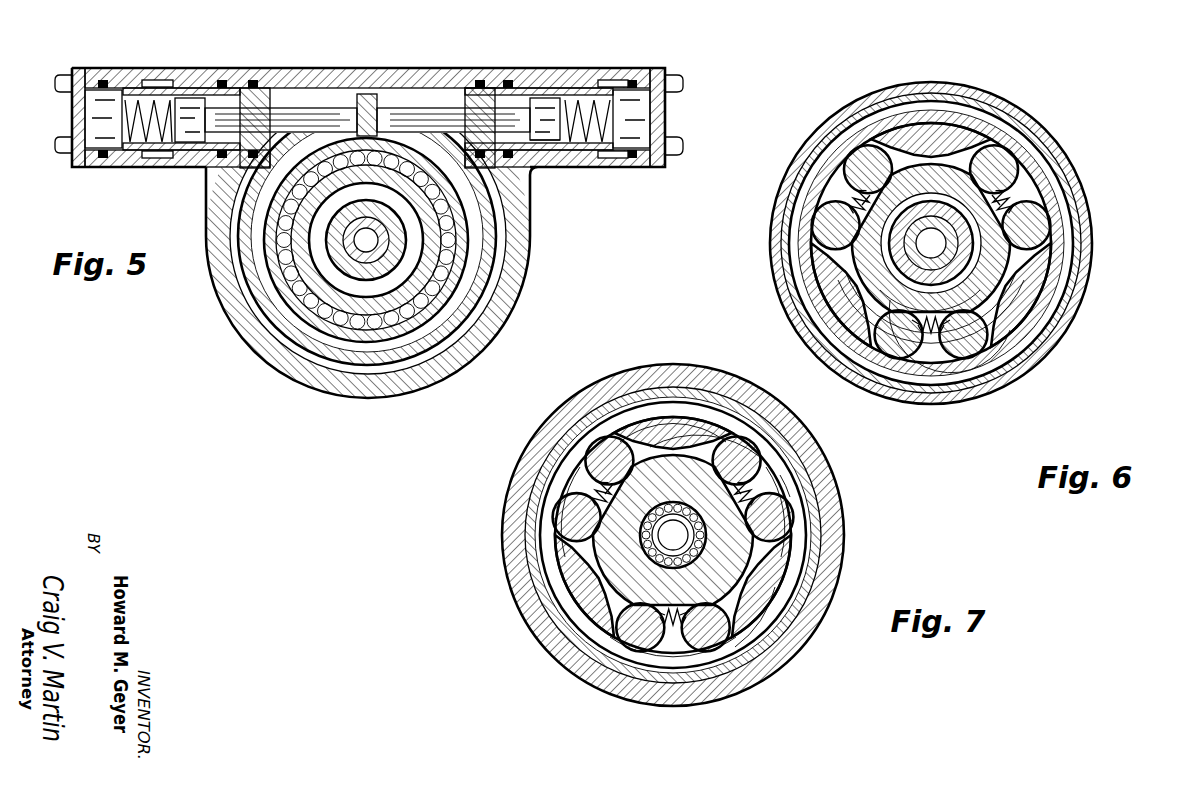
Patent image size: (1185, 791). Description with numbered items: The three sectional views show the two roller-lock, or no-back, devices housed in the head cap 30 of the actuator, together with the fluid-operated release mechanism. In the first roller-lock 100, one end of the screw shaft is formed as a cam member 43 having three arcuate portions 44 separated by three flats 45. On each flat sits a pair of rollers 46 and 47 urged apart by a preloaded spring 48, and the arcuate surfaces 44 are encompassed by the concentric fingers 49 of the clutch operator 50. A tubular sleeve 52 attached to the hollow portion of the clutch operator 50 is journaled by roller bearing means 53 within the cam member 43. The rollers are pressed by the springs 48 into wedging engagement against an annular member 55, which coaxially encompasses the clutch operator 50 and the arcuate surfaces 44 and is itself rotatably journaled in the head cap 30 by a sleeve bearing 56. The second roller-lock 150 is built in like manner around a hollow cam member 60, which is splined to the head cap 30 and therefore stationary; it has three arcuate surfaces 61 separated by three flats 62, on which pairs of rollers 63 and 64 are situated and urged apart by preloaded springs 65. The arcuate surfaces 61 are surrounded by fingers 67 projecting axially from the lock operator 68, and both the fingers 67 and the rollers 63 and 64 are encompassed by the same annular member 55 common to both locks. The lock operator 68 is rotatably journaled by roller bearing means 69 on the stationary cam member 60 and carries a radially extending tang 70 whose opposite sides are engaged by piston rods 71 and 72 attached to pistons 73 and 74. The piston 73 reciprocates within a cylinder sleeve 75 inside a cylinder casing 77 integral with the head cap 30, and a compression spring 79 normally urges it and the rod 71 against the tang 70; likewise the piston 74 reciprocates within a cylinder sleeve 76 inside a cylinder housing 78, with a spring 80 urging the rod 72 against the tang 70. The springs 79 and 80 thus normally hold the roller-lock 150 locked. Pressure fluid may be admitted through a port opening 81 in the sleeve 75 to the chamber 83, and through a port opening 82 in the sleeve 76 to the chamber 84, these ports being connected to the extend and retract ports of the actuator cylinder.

In FIG. 5, the head cap 30 is at (514, 284).
In FIG. 6, the head cap 30 is at (840, 108).
In FIG. 7, the head cap 30 is at (818, 616).
In FIG. 7, the cam member 43 is at (783, 643).
In FIG. 7, the arcuate portions 44 is at (688, 462).
In FIG. 7, the flats 45 is at (593, 485).
In FIG. 7, the roller 46 is at (750, 452).
In FIG. 7, the roller 47 is at (609, 458).
In FIG. 7, the preloaded spring 48 is at (760, 485).
In FIG. 7, the fingers 49 is at (667, 450).
In FIG. 5, the clutch operator 50 is at (340, 272).
In FIG. 6, the clutch operator 50 is at (945, 165).
In FIG. 5, the tubular sleeve 52 is at (360, 268).
In FIG. 6, the tubular sleeve 52 is at (1000, 185).
In FIG. 7, the tubular sleeve 52 is at (682, 570).
In FIG. 7, the roller bearing means 53 is at (706, 535).
In FIG. 6, the annular member 55 is at (1062, 249).
In FIG. 7, the annular member 55 is at (803, 562).
In FIG. 6, the sleeve bearing 56 is at (1062, 303).
In FIG. 7, the sleeve bearing 56 is at (557, 460).
In FIG. 5, the hollow cam member 60 is at (432, 330).
In FIG. 6, the hollow cam member 60 is at (987, 353).
In FIG. 6, the arcuate surfaces 61 is at (943, 215).
In FIG. 6, the flats 62 is at (840, 188).
In FIG. 6, the roller 63 is at (987, 150).
In FIG. 6, the roller 64 is at (868, 160).
In FIG. 6, the preloaded spring 65 is at (850, 196).
In FIG. 6, the fingers 67 is at (930, 145).
In FIG. 5, the lock operator 68 is at (458, 292).
In FIG. 5, the roller bearing means 69 is at (405, 300).
In FIG. 5, the tang 70 is at (367, 118).
In FIG. 5, the piston rod 71 is at (323, 108).
In FIG. 5, the piston rod 72 is at (430, 110).
In FIG. 5, the piston 73 is at (200, 108).
In FIG. 5, the piston 74 is at (538, 98).
In FIG. 5, the cylinder sleeve 75 is at (193, 98).
In FIG. 5, the cylinder sleeve 76 is at (622, 92).
In FIG. 5, the cylinder casing 77 is at (140, 80).
In FIG. 5, the cylinder housing 78 is at (598, 88).
In FIG. 5, the compression spring 79 is at (138, 145).
In FIG. 5, the spring 80 is at (577, 132).
In FIG. 5, the port opening 81 is at (160, 82).
In FIG. 5, the port opening 82 is at (583, 80).
In FIG. 5, the chamber 83 is at (118, 145).
In FIG. 5, the chamber 84 is at (548, 132).
In FIG. 7, the first roller-lock 100 is at (782, 492).
In FIG. 6, the second roller-lock 150 is at (1020, 340).